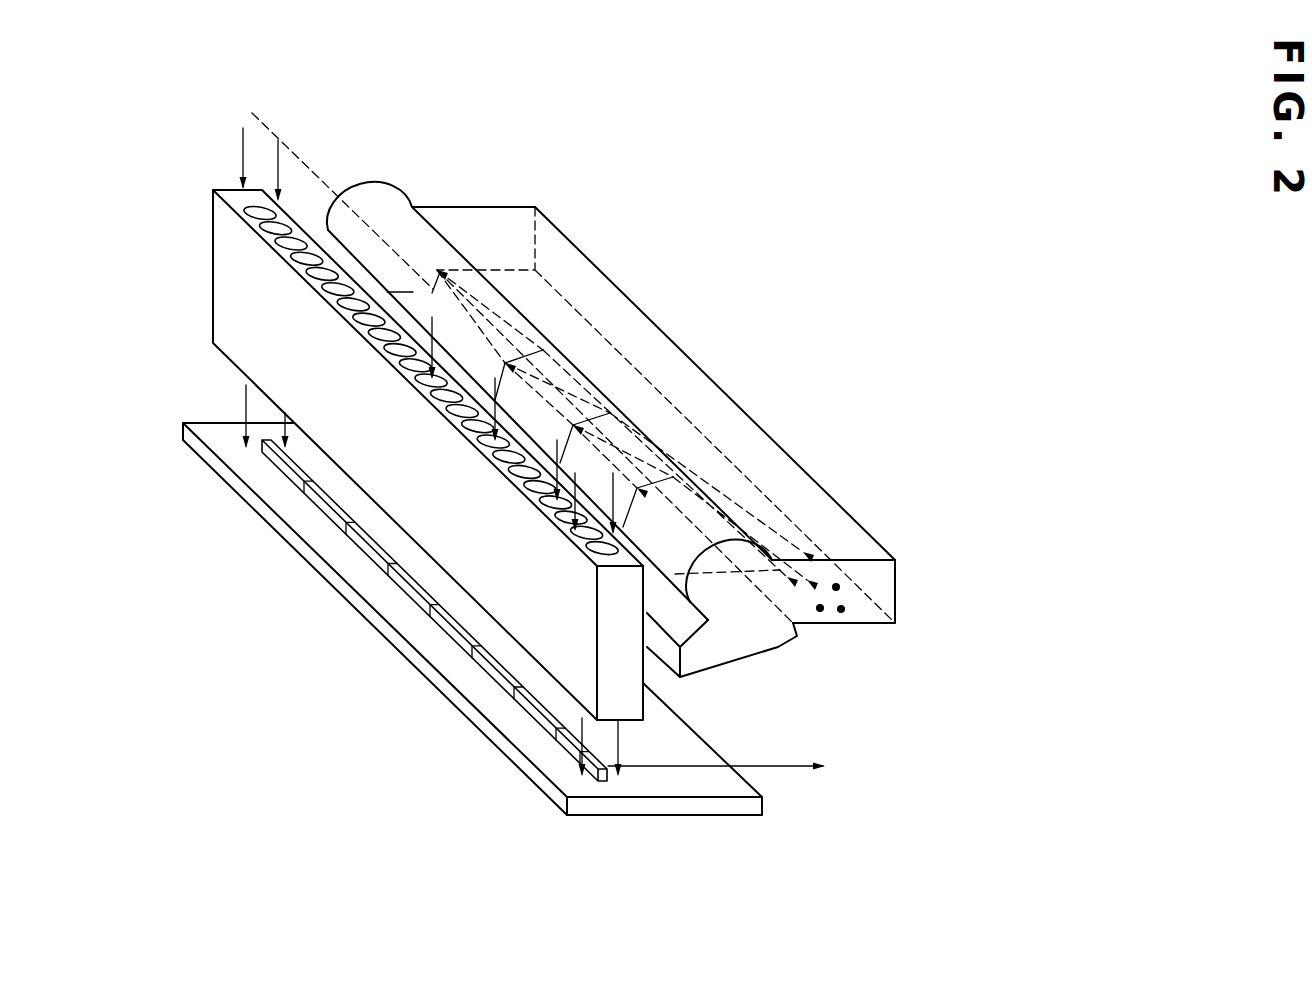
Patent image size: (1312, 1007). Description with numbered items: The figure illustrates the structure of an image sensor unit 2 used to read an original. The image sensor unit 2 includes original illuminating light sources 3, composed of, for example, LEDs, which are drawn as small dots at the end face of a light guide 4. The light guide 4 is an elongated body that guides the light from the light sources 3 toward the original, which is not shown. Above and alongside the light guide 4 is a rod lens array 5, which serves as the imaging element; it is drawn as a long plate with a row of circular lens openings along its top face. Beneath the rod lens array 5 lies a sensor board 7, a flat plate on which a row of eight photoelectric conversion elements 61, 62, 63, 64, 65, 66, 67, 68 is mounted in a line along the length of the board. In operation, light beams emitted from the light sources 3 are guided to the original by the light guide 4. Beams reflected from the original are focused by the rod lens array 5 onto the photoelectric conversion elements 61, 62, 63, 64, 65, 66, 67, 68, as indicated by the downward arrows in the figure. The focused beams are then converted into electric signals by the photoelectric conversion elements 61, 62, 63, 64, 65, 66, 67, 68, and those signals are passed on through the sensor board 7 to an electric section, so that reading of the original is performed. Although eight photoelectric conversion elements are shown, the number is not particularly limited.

The image sensor unit 2 is at (889, 304).
The original illuminating light source 3 is at (840, 586).
The light guide 4 is at (680, 347).
The rod lens array 5 is at (213, 278).
The sensor board 7 is at (667, 808).
The photoelectric conversion element 61 is at (280, 462).
The photoelectric conversion element 62 is at (322, 503).
The photoelectric conversion element 63 is at (364, 544).
The photoelectric conversion element 64 is at (406, 585).
The photoelectric conversion element 65 is at (448, 626).
The photoelectric conversion element 66 is at (490, 667).
The photoelectric conversion element 67 is at (532, 708).
The photoelectric conversion element 68 is at (574, 749).